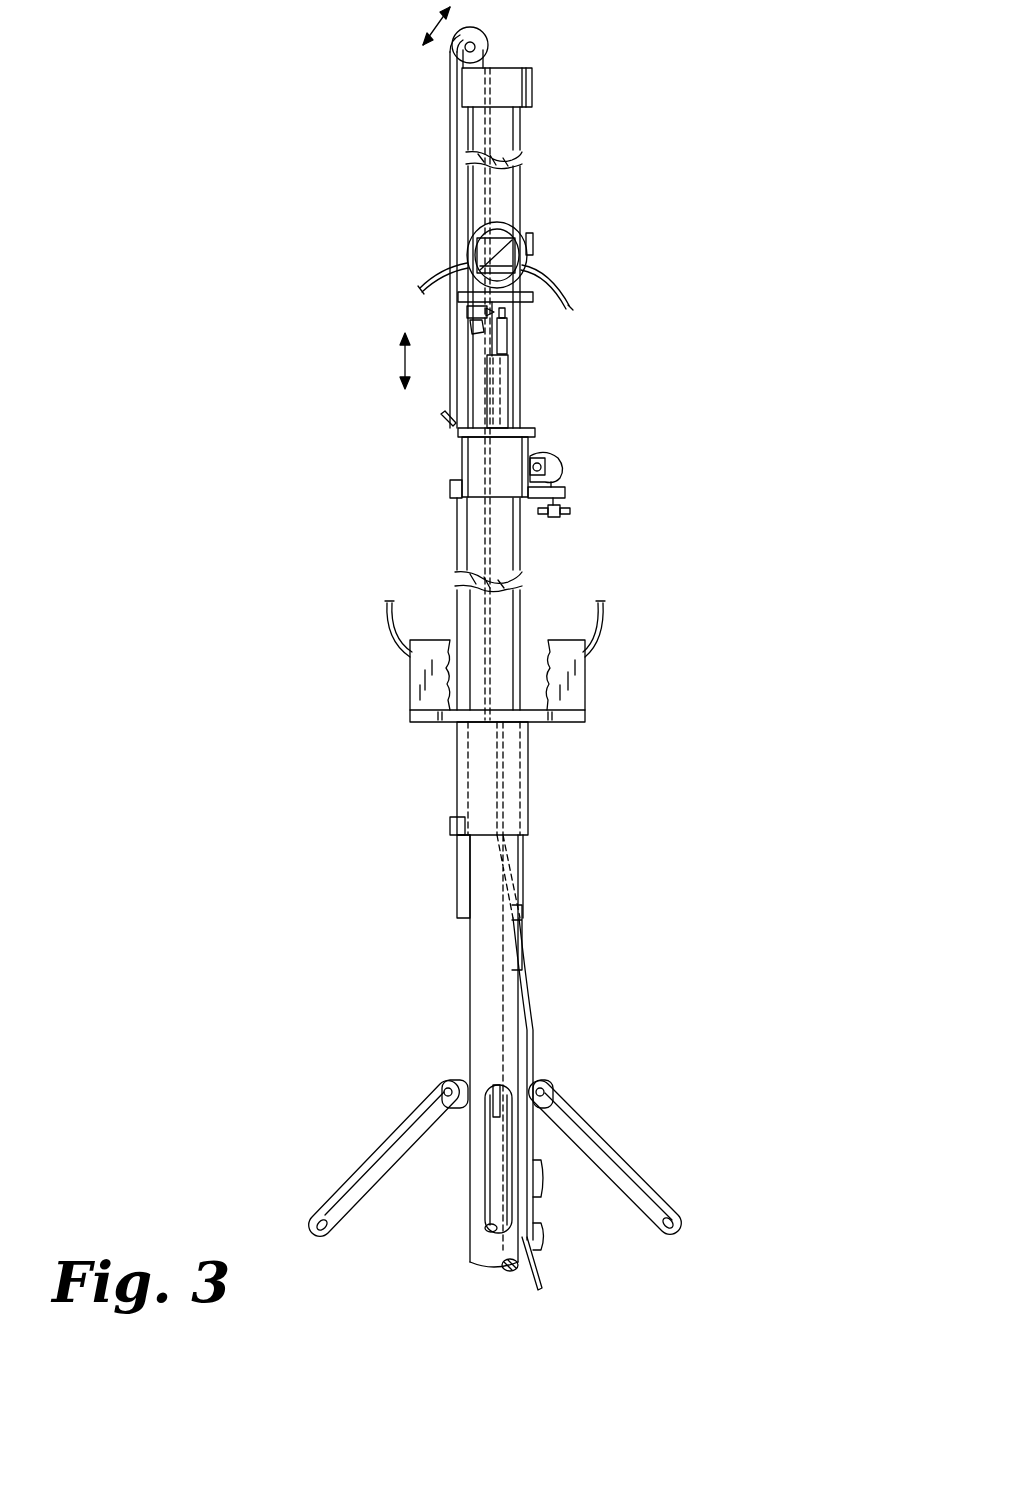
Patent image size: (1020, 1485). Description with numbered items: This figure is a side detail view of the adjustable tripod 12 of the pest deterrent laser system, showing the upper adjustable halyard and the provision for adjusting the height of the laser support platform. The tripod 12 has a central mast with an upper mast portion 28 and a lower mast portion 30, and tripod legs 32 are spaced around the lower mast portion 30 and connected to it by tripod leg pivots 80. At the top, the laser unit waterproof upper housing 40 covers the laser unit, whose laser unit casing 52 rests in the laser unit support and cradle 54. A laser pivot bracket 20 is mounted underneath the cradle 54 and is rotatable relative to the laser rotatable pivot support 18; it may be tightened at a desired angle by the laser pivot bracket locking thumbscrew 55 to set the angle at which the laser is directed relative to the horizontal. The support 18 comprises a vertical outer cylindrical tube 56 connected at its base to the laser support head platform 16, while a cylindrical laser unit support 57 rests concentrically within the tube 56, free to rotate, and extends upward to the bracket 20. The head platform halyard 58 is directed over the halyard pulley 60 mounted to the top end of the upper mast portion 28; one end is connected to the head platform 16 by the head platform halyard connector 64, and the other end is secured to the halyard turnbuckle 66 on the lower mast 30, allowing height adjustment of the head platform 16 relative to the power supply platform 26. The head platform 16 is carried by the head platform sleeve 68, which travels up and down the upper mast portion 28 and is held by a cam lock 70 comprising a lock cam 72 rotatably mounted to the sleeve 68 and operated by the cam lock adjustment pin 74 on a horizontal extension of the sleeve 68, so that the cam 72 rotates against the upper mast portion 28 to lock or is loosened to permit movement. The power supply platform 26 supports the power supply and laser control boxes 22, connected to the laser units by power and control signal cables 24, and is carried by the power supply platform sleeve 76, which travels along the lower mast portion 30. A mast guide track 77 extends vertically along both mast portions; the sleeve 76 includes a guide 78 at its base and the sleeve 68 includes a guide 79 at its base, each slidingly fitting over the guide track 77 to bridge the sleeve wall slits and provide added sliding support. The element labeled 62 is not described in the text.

The tripod 12 is at (613, 479).
The laser support head platform 16 is at (460, 432).
The laser rotatable pivot support 18 is at (509, 390).
The laser pivot bracket 20 is at (475, 347).
The power supply and laser control box 22 is at (586, 685).
The power and control signal cable 24 is at (428, 280).
The power supply platform 26 is at (565, 722).
The upper mast portion 28 is at (522, 180).
The lower mast portion 30 is at (470, 950).
The tripod leg 32 is at (648, 1173).
The laser unit waterproof upper housing 40 is at (528, 238).
The laser unit casing 52 is at (534, 250).
The laser unit support and cradle 54 is at (530, 302).
The laser pivot bracket locking thumbscrew 55 is at (468, 312).
The vertical outer cylindrical tube 56 is at (535, 428).
The cylindrical laser unit support 57 is at (507, 340).
The head platform halyard 58 is at (450, 105).
The halyard pulley 60 is at (488, 40).
The pulley shaft 62 is at (458, 50).
The head platform halyard connector 64 is at (443, 423).
The halyard turnbuckle 66 is at (543, 1240).
The head platform sleeve 68 is at (480, 468).
The cam lock 70 is at (562, 476).
The lock cam 72 is at (556, 458).
The cam lock adjustment pin 74 is at (562, 517).
The power supply platform sleeve 76 is at (480, 773).
The mast guide track 77 is at (458, 540).
The guide 78 is at (450, 825).
The guide 79 is at (455, 492).
The tripod leg pivot 80 is at (495, 1080).